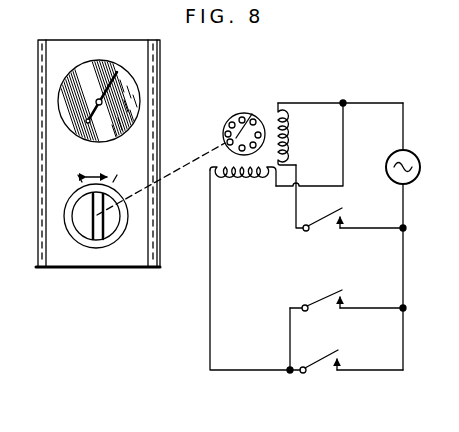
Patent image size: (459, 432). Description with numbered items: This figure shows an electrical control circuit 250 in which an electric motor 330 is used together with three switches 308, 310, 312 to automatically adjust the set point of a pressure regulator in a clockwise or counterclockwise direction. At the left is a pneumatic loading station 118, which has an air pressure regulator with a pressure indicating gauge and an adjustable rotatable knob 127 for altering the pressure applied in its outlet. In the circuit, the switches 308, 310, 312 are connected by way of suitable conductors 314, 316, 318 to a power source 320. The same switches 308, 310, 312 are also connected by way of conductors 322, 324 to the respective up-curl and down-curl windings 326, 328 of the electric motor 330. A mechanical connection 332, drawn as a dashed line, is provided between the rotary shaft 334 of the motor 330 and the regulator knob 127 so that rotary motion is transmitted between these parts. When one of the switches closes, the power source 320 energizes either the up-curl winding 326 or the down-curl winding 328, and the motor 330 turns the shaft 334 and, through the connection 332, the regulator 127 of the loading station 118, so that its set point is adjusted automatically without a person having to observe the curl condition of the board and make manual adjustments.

The pneumatic loading station 118 is at (65, 53).
The adjustable rotatable knob 127 is at (85, 228).
The control circuit 250 is at (424, 0).
The switch 308 is at (343, 291).
The switch 310 is at (345, 210).
The switch 312 is at (341, 352).
The conductor 314 is at (377, 372).
The conductor 316 is at (372, 310).
The conductor 318 is at (377, 230).
The power source 320 is at (395, 152).
The conductor 322 is at (292, 218).
The conductor 324 is at (265, 370).
The up-curl winding 326 is at (247, 181).
The down-curl winding 328 is at (290, 138).
The electric motor 330 is at (233, 112).
The mechanical connection 332 is at (210, 151).
The rotary shaft 334 is at (252, 114).